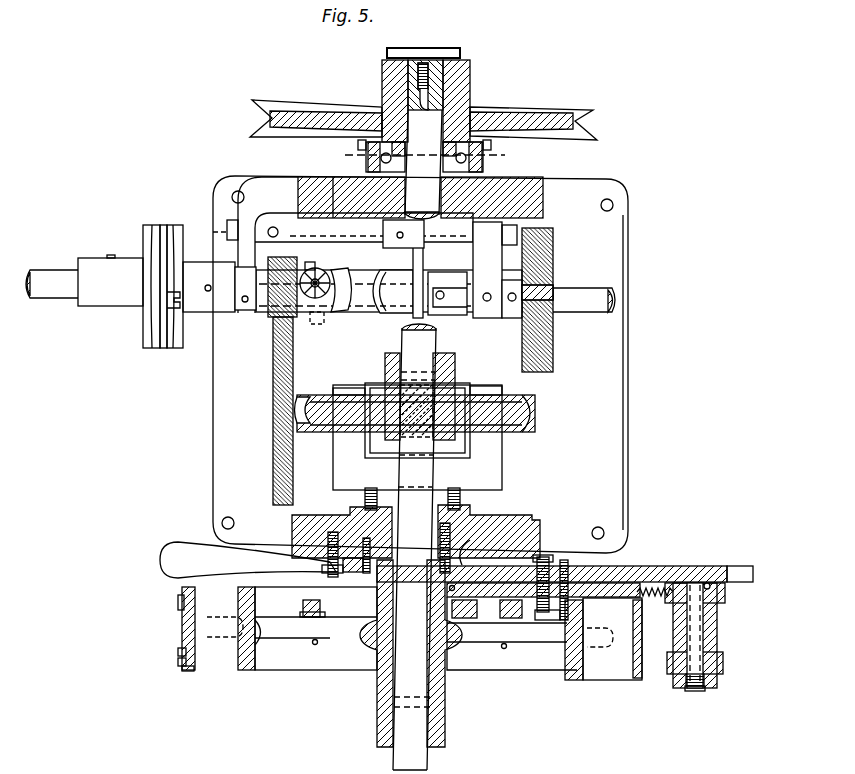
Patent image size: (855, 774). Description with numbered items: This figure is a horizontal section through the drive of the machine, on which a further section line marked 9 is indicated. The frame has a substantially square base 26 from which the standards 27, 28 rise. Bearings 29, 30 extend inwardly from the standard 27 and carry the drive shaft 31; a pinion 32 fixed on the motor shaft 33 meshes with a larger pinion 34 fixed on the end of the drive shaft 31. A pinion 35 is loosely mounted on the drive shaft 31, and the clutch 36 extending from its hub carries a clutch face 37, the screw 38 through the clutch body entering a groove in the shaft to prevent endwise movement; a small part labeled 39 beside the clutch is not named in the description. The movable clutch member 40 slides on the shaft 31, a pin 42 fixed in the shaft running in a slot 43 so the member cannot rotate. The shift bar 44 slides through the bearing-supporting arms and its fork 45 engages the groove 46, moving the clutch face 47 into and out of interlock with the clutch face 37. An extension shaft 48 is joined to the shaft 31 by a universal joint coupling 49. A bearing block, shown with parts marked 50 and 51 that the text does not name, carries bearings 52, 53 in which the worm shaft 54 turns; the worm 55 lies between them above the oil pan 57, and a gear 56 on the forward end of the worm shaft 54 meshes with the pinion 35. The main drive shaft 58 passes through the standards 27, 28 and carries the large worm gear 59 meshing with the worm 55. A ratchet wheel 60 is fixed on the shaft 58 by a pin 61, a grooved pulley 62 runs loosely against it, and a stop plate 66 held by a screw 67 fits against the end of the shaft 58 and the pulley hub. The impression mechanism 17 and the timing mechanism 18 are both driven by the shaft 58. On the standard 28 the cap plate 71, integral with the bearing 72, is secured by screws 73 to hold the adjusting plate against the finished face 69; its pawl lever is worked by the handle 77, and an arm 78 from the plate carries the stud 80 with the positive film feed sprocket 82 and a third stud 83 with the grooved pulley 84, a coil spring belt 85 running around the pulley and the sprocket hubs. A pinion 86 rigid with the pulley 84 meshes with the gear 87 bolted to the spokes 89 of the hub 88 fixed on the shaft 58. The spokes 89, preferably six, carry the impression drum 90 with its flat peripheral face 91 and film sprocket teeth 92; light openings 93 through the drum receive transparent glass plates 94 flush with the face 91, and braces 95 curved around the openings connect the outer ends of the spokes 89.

The section line 9 is at (350, 149).
The impression mechanism 17 is at (512, 688).
The timing mechanism 18 is at (644, 560).
The base 26 is at (629, 402).
The standard 27 is at (531, 190).
The standard 28 is at (513, 523).
The bearing 29 is at (242, 310).
The bearing 30 is at (488, 318).
The drive shaft 31 is at (365, 312).
The pinion 32 is at (552, 284).
The motor shaft 33 is at (580, 293).
The pinion 34 is at (553, 248).
The pinion 35 is at (290, 267).
The clutch 36 is at (323, 273).
The clutch face 37 is at (350, 270).
The screw 38 is at (315, 265).
The spring 39 is at (313, 312).
The movable clutch member 40 is at (440, 278).
The pin 42 is at (443, 292).
The slot 43 is at (433, 329).
The shift bar 44 is at (291, 222).
The fork 45 is at (430, 253).
The groove 46 is at (418, 317).
The clutch face 47 is at (377, 273).
The extension shaft 48 is at (55, 276).
The universal joint coupling 49 is at (152, 227).
The housing 50 is at (502, 459).
The screw 51 is at (463, 502).
The bearing 52 is at (352, 390).
The bearing 53 is at (487, 394).
The worm shaft 54 is at (268, 409).
The worm 55 is at (393, 430).
The gear 56 is at (278, 372).
The oil pan 57 is at (458, 387).
The main drive shaft 58 is at (435, 477).
The worm gear 59 is at (530, 403).
The ratchet wheel 60 is at (484, 153).
The pin 61 is at (422, 155).
The grooved pulley 62 is at (559, 109).
The stop plate 66 is at (450, 57).
The screw 67 is at (420, 98).
The finished face 69 is at (533, 558).
The cap plate 71 is at (350, 578).
The bearing 72 is at (478, 548).
The screws 73 is at (447, 540).
The handle 77 is at (178, 547).
The arm 78 is at (670, 568).
The stud 80 is at (697, 687).
The positive film feed sprocket 82 is at (723, 675).
The third stud 83 is at (551, 582).
The grooved pulley 84 is at (607, 585).
The coil spring belt 85 is at (655, 598).
The pinion 86 is at (587, 610).
The gear 87 is at (302, 605).
The hub 88 is at (441, 664).
The spokes 89 is at (288, 633).
The impression drum 90 is at (188, 668).
The flat peripheral face 91 is at (181, 661).
The film sprocket teeth 92 is at (180, 653).
The light openings 93 is at (192, 636).
The transparent glass plates 94 is at (180, 630).
The braces 95 is at (245, 667).